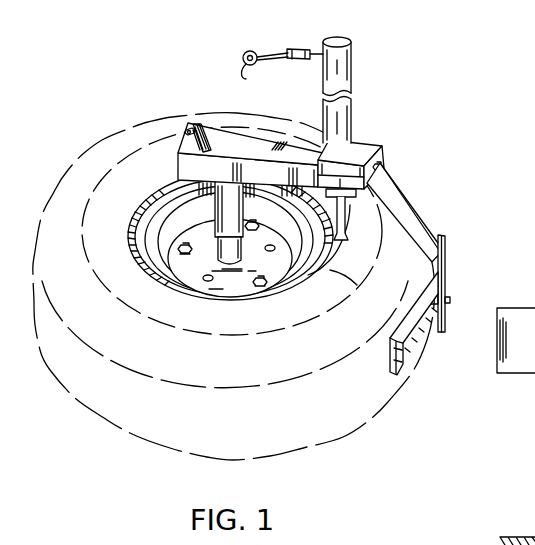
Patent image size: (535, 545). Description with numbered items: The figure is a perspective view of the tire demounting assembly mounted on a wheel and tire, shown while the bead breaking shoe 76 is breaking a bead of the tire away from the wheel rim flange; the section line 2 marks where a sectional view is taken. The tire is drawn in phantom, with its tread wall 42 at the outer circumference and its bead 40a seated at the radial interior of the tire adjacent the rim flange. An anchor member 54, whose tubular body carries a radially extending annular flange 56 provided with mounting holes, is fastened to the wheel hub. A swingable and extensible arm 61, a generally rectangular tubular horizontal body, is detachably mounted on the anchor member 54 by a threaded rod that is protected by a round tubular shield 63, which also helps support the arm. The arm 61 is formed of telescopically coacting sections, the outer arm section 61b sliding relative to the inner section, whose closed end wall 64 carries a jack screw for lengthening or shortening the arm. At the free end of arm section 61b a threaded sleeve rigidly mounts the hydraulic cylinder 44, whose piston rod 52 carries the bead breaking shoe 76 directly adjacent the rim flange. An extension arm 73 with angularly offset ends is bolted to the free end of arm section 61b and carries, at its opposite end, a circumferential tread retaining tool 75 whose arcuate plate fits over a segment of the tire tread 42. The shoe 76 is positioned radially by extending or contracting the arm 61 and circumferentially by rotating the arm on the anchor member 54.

The section line 2- 2 is at (110, 133).
The tread wall 42 is at (345, 413).
The hydraulic cylinder 44 is at (357, 63).
The piston rod 52 is at (386, 212).
The anchor member 54 is at (277, 248).
The annular flange 56 is at (157, 285).
The swingable and extensible arm 61 is at (250, 153).
The arm section 61b is at (382, 146).
The shield 63 is at (214, 204).
The closed end wall 64 is at (190, 128).
The extension arm 73 is at (408, 218).
The circumferential tread retaining tool 75 is at (409, 366).
The bead breaking shoe 76 is at (357, 285).
The bead 40a is at (534, 470).